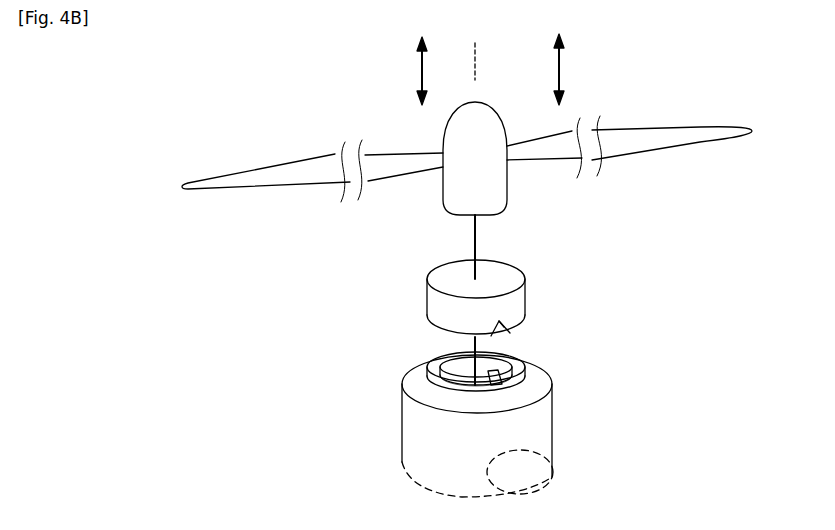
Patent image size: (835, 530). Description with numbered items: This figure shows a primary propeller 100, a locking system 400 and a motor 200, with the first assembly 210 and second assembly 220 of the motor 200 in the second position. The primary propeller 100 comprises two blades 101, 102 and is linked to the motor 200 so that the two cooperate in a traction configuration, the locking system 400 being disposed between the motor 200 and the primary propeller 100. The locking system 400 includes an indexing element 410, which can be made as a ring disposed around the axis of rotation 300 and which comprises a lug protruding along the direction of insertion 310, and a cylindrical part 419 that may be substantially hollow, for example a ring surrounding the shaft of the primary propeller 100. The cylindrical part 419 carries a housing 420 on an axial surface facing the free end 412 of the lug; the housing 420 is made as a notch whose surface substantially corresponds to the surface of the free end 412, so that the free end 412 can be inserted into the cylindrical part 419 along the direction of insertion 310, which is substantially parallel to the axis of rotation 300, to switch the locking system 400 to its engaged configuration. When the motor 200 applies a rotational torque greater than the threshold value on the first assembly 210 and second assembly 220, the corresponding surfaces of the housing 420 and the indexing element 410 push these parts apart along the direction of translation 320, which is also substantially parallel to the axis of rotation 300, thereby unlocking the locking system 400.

The primary propeller 100 is at (318, 108).
The blade 101 is at (672, 135).
The blade 102 is at (244, 172).
The axis of rotation 300 is at (477, 58).
The direction of insertion 310 is at (418, 72).
The direction of translation 320 is at (563, 72).
The locking system 400 is at (488, 274).
The cylindrical part 419 is at (428, 302).
The housing 420 is at (502, 322).
The indexing element 410 is at (430, 368).
The free end 412 is at (520, 363).
The motor 200 is at (448, 417).
The first assembly 210 is at (462, 378).
The second assembly 220 is at (403, 432).